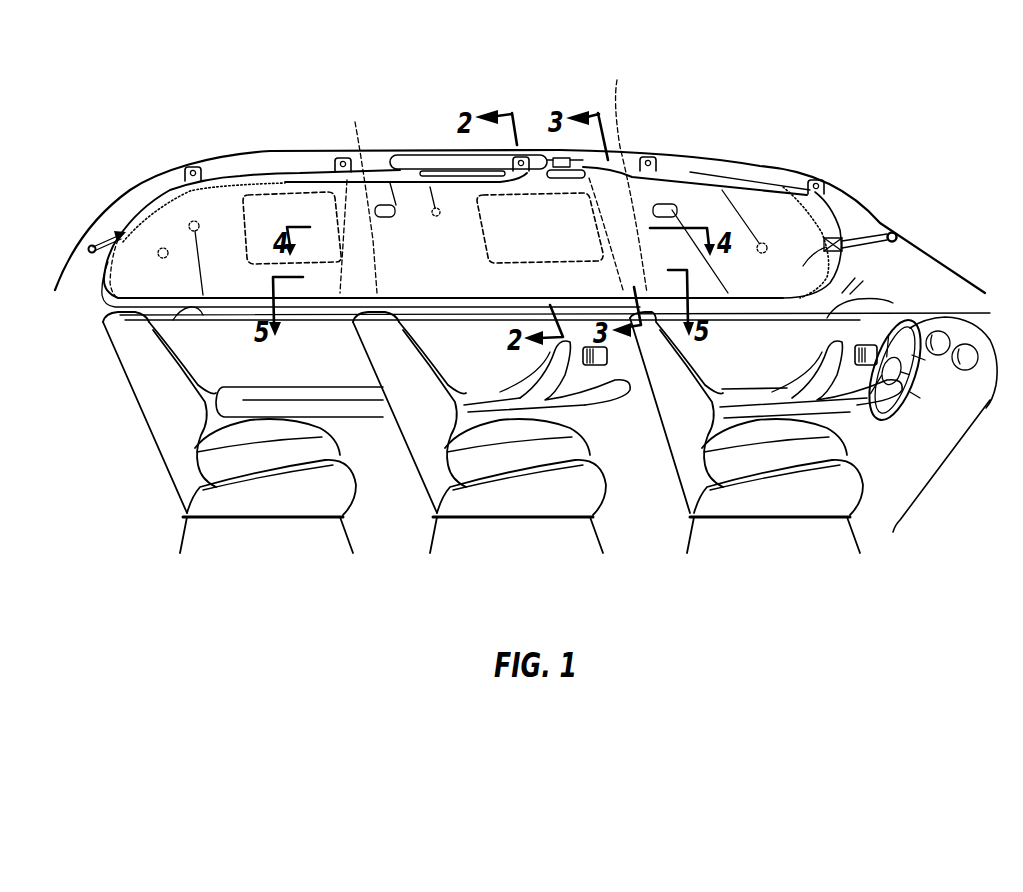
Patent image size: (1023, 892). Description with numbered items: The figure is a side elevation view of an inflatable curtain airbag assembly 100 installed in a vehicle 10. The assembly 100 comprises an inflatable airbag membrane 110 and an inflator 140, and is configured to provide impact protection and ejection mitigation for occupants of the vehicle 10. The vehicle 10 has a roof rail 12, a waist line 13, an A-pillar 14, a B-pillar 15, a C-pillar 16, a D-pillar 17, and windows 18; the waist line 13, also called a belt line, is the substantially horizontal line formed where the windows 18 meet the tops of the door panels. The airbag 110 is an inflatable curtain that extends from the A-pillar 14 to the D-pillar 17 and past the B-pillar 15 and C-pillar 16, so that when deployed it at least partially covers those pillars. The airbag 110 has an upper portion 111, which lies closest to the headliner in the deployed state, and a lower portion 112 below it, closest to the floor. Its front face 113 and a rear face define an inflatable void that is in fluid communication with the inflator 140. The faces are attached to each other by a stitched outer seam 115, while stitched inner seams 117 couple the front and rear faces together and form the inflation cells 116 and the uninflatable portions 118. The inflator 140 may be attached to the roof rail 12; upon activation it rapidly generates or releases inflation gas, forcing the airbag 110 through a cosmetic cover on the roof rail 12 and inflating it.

The vehicle 10 is at (325, 60).
The inflatable curtain airbag assembly 100 is at (688, 63).
The roof rail 12 is at (746, 174).
The waist line 13 is at (201, 312).
The A-pillar 14 is at (878, 214).
The B-pillar 15 is at (618, 175).
The C-pillar 16 is at (358, 196).
The D-pillar 17 is at (103, 222).
The windows 18 is at (163, 247).
The inflatable airbag membrane 110 is at (784, 215).
The upper portion 111 is at (820, 207).
The lower portion 112 is at (840, 253).
The front face 113 is at (408, 251).
The outer seam 115 is at (330, 173).
The inflation cells 116 is at (413, 222).
The inner seams 117 is at (580, 197).
The uninflatable portions 118 is at (236, 210).
The inflator 140 is at (453, 156).